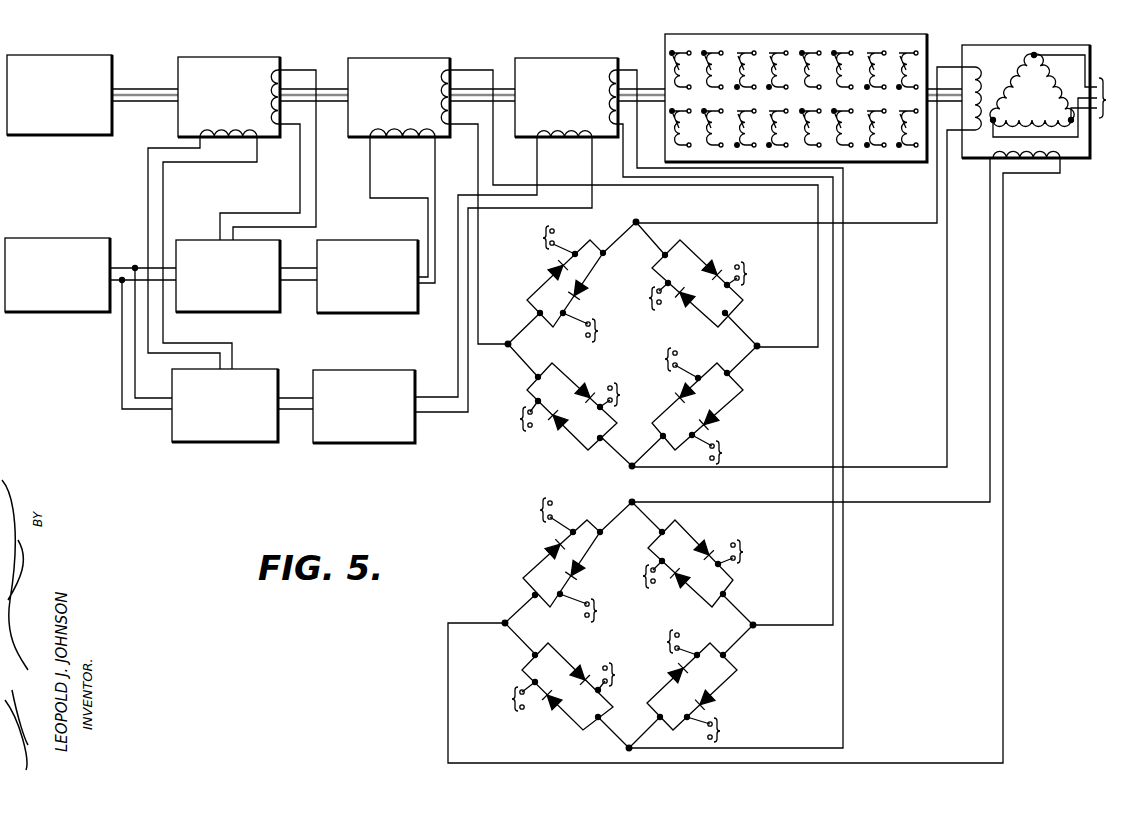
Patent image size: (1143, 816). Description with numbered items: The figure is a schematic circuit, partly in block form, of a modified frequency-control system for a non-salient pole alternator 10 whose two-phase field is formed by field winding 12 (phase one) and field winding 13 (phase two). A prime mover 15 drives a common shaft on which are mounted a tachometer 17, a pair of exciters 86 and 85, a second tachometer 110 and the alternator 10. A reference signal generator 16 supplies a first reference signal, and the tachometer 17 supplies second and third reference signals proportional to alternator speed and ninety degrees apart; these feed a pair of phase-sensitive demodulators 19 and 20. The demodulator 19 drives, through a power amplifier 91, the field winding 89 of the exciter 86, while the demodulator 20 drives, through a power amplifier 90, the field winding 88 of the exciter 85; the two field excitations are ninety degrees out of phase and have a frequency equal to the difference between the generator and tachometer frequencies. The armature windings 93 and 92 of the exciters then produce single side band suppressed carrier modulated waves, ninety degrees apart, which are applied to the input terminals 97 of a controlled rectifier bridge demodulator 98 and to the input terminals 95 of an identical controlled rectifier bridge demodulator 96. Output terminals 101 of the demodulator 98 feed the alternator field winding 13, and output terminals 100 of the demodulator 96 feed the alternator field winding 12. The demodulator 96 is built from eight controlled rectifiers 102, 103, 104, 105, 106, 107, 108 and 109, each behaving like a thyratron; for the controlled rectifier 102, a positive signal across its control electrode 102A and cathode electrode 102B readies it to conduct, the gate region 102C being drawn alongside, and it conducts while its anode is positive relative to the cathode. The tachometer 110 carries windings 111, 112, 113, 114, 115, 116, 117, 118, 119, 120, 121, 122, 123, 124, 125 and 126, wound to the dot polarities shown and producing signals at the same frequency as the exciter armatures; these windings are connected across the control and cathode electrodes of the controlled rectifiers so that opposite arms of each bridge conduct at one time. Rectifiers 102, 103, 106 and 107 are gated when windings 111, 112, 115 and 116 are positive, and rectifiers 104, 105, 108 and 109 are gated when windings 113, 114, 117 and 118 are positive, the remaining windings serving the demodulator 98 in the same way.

The prime mover 15 is at (100, 56).
The tachometer 17 is at (212, 58).
The exciter 86 is at (372, 58).
The exciter 85 is at (540, 58).
The armature winding 93 is at (455, 66).
The armature winding 92 is at (620, 66).
The field winding 89 is at (437, 138).
The field winding 88 is at (603, 138).
The tachometer 110 is at (880, 34).
The alternator 10 is at (1025, 45).
The field winding 13 is at (979, 60).
The field winding 12 is at (1063, 160).
The reference signal generator 16 is at (66, 238).
The phase-sensitive demodulator 19 is at (204, 240).
The phase-sensitive demodulator 20 is at (237, 443).
The power amplifier 91 is at (364, 313).
The power amplifier 90 is at (379, 443).
The controlled rectifier bridge demodulator 98 is at (668, 233).
The controlled rectifier bridge demodulator 96 is at (512, 558).
The input terminals 97 is at (507, 338).
The output terminals 101 is at (636, 222).
The input terminals 95 is at (505, 618).
The output terminals 100 is at (632, 502).
The controlled rectifier 102 is at (543, 547).
The control electrode 102A is at (547, 579).
The cathode electrode 102B is at (556, 530).
The diode cathode 102C is at (556, 533).
The controlled rectifier 103 is at (588, 560).
The controlled rectifier 104 is at (703, 536).
The controlled rectifier 105 is at (678, 592).
The controlled rectifier 106 is at (718, 695).
The controlled rectifier 107 is at (674, 688).
The controlled rectifier 108 is at (553, 716).
The controlled rectifier 109 is at (590, 653).
The tachometer winding 111 is at (680, 63).
The tachometer winding 112 is at (712, 63).
The tachometer winding 113 is at (745, 63).
The tachometer winding 114 is at (777, 63).
The tachometer winding 115 is at (810, 63).
The tachometer winding 116 is at (842, 63).
The tachometer winding 117 is at (876, 63).
The tachometer winding 118 is at (907, 63).
The tachometer winding 119 is at (680, 121).
The tachometer winding 120 is at (712, 121).
The tachometer winding 121 is at (745, 121).
The tachometer winding 122 is at (777, 121).
The tachometer winding 123 is at (810, 121).
The tachometer winding 124 is at (842, 121).
The tachometer winding 125 is at (875, 121).
The tachometer winding 126 is at (907, 121).